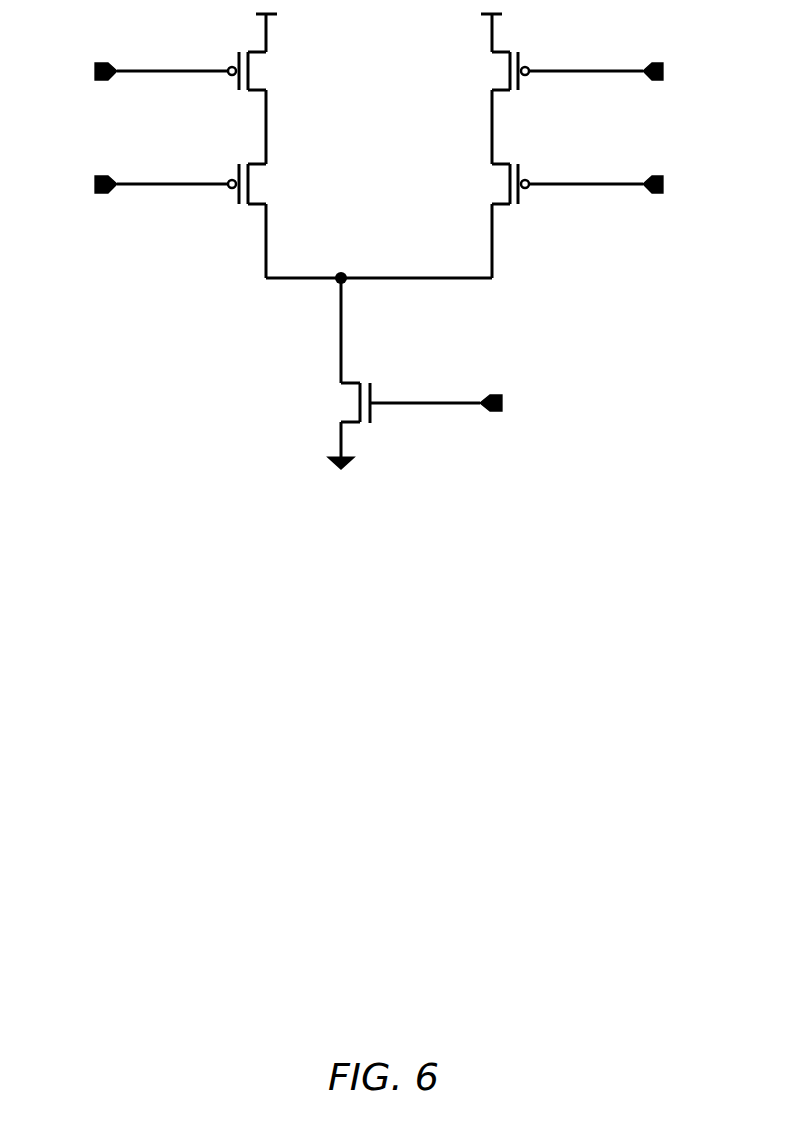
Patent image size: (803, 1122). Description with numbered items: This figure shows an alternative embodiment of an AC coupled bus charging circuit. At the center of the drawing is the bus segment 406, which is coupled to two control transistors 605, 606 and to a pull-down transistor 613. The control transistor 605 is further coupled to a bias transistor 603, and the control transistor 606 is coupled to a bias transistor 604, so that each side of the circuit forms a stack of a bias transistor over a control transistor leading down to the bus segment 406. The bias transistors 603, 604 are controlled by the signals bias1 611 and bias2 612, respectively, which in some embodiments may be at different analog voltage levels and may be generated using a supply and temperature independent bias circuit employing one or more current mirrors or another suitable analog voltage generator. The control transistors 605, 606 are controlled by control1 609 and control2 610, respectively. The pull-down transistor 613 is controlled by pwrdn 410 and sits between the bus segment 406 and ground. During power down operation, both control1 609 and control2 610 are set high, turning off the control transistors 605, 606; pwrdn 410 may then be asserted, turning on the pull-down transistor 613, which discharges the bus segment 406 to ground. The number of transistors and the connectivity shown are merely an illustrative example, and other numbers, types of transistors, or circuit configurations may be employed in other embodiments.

The bus segment 406 is at (418, 280).
The pwrdn 410 is at (456, 398).
The bias transistor 603 is at (237, 50).
The bias transistor 604 is at (521, 51).
The control transistor 605 is at (237, 162).
The control transistor 606 is at (521, 162).
The control1 609 is at (135, 179).
The control2 610 is at (627, 180).
The bias1 611 is at (135, 66).
The bias2 612 is at (626, 67).
The pull-down transistor 613 is at (372, 382).